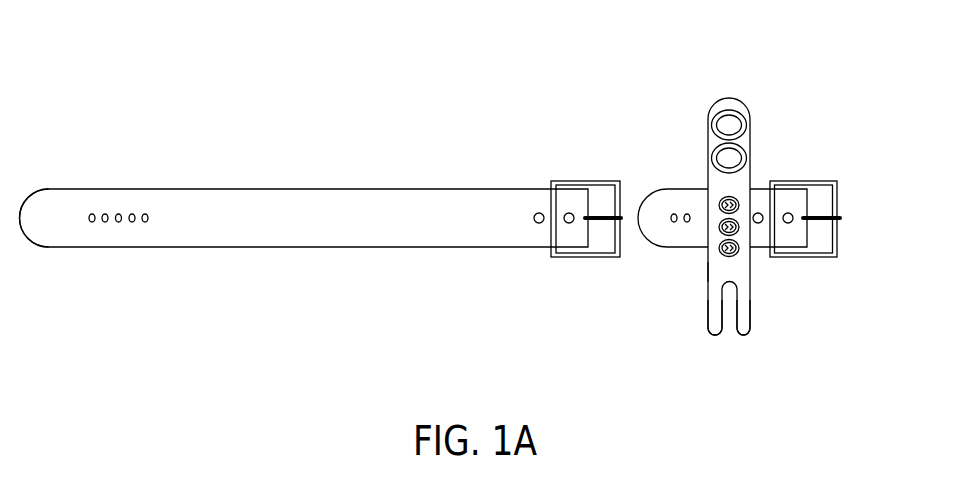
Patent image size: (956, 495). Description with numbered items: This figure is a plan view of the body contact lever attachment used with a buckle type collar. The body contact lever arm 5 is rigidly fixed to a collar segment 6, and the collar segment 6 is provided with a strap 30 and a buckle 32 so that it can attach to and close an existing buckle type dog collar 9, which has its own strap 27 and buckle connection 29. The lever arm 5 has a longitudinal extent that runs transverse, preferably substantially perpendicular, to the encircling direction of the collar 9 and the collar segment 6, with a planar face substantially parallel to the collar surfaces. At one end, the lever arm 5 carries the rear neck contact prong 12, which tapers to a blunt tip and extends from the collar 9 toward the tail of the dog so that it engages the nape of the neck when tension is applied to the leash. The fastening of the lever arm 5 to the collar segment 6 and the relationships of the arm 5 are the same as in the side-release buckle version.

The dog collar 9 is at (291, 187).
The strap 27 is at (78, 197).
The buckle connection 29 is at (578, 180).
The strap 30 is at (652, 208).
The buckle 32 is at (838, 188).
The collar segment 6 is at (688, 102).
The body contact lever arm 5 is at (708, 262).
The rear neck contact prong 12 is at (708, 316).